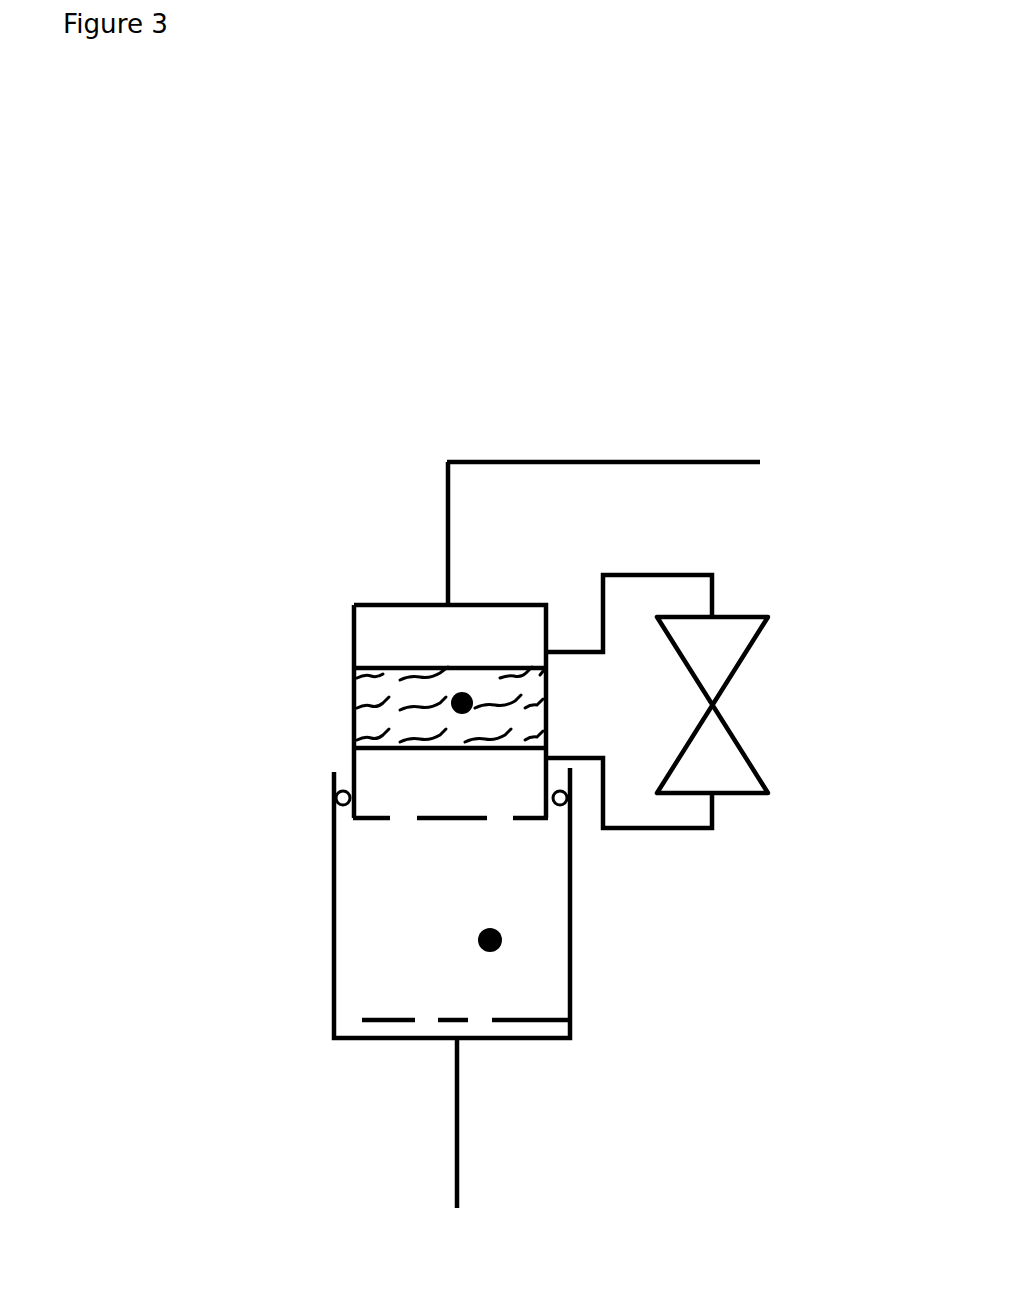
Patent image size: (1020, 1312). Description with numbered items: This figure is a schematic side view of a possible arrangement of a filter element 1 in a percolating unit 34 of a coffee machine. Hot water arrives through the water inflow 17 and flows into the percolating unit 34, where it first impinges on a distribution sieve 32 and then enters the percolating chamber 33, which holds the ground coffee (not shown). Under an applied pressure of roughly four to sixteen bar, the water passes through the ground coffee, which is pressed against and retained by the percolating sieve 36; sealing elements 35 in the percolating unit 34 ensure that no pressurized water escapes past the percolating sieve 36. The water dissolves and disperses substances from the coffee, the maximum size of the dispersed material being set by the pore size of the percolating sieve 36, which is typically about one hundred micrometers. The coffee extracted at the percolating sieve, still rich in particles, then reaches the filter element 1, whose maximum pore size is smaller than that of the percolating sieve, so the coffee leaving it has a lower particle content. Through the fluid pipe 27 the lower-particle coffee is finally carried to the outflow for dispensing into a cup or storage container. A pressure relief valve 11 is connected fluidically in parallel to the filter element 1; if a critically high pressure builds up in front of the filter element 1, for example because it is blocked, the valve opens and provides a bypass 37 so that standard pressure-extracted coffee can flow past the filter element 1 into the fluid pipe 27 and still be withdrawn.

The fluid pipe 27 is at (585, 435).
The bypass for coffee 37 is at (728, 563).
The pressure relief valve 11 is at (745, 714).
The percolating unit 34 is at (354, 643).
The filter element 1 is at (462, 703).
The percolating sieve 36 is at (427, 801).
The sealing element 35 is at (315, 805).
The distribution sieve 32 is at (343, 1013).
The percolating chamber 33 is at (490, 940).
The water inflow 17 is at (440, 1125).